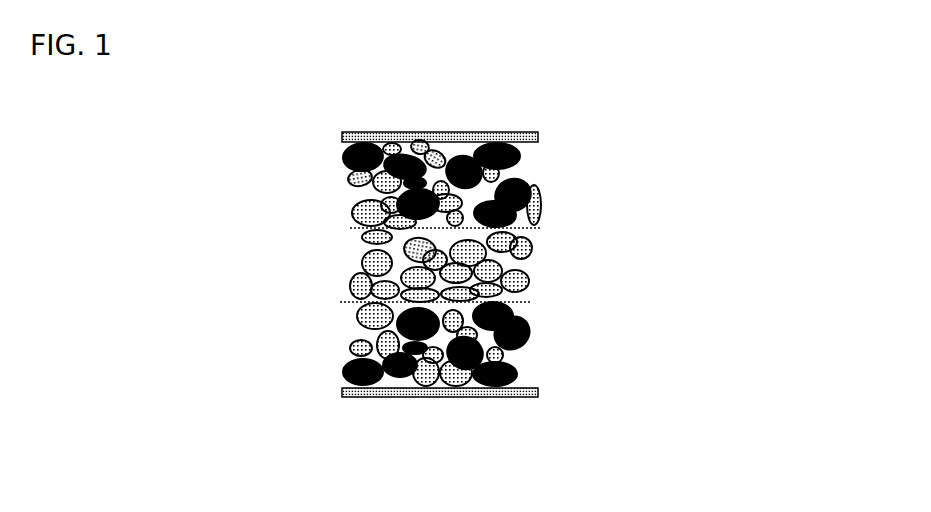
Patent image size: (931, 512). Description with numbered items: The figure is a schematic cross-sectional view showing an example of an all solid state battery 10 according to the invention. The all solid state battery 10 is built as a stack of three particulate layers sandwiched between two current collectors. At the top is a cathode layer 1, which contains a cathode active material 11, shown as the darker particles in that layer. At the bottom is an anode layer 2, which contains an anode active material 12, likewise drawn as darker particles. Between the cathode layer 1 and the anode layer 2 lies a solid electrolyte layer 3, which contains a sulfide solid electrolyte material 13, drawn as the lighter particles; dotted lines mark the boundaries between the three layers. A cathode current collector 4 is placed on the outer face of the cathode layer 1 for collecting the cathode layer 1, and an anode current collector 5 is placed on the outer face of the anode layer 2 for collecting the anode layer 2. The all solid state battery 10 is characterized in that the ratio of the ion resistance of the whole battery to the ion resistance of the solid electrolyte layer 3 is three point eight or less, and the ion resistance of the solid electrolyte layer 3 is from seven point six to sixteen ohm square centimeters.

The all solid state battery 10 is at (634, 162).
The cathode layer 1 is at (555, 145).
The anode layer 2 is at (555, 307).
The solid electrolyte layer 3 is at (555, 231).
The cathode current collector 4 is at (538, 135).
The anode current collector 5 is at (537, 397).
The cathode active material 11 is at (352, 162).
The anode active material 12 is at (352, 377).
The sulfide solid electrolyte material 13 is at (365, 265).